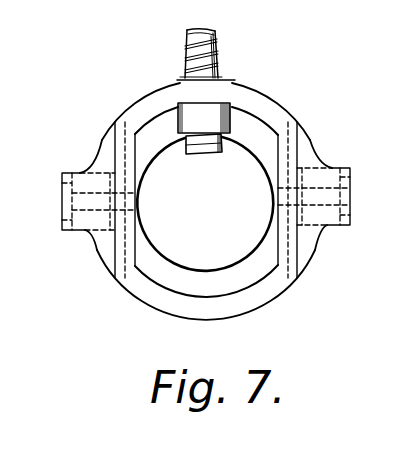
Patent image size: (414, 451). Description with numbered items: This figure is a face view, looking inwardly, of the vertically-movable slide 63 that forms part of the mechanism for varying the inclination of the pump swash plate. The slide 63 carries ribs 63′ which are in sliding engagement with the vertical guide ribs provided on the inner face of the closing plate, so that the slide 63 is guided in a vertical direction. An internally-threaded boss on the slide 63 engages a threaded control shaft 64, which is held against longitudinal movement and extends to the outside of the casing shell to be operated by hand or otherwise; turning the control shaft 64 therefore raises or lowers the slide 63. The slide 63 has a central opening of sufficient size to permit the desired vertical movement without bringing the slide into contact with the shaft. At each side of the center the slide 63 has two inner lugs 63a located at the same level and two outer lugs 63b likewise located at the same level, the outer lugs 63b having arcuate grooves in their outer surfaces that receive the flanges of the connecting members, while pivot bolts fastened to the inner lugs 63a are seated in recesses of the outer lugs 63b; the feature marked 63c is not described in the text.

The slide 63 is at (143, 102).
The ribs 63′ is at (317, 263).
The inner lugs 63a is at (128, 213).
The outer lugs 63b is at (75, 172).
The pin head 63c is at (362, 213).
The threaded control shaft 64 is at (218, 38).